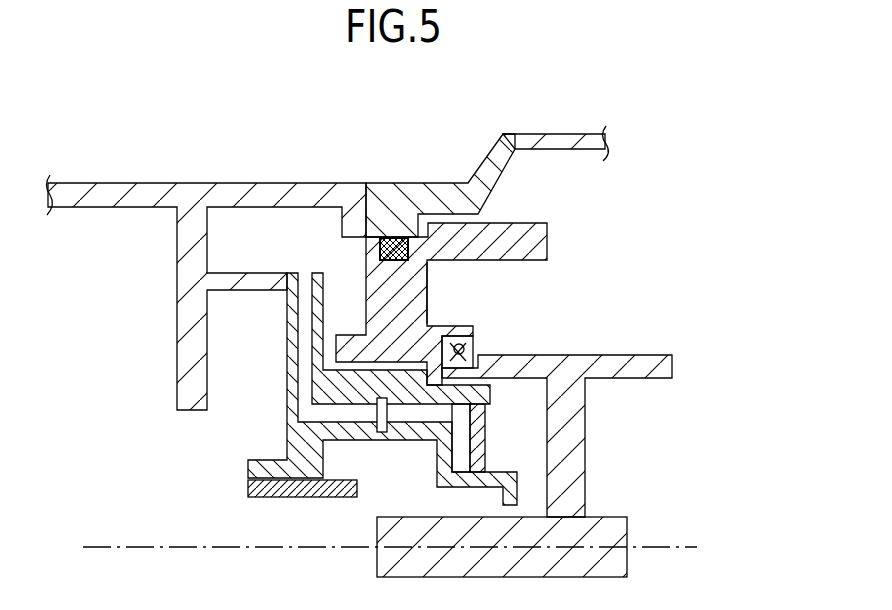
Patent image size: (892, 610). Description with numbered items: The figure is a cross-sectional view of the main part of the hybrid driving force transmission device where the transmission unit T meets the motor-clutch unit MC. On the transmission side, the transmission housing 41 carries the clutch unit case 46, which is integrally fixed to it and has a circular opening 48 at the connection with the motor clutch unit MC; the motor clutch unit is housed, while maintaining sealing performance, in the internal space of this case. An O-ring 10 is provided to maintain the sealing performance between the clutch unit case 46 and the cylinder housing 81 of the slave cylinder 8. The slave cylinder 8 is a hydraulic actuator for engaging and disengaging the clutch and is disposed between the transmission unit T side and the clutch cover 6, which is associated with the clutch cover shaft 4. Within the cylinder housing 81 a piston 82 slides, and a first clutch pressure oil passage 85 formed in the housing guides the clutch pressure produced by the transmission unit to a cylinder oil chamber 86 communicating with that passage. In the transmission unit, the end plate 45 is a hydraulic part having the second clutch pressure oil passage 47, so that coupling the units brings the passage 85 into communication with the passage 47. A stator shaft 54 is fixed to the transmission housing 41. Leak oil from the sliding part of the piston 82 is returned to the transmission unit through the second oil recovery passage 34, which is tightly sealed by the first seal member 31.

The transmission housing 41 is at (122, 195).
The clutch unit case 46 is at (552, 142).
The circular opening 48 is at (366, 249).
The O-ring 10 is at (420, 278).
The cylinder housing 81 is at (427, 303).
The first seal member 31 is at (463, 343).
The second oil recovery passage 34 is at (377, 367).
The second clutch pressure oil passage 47 is at (304, 366).
The end plate 45 is at (308, 442).
The first clutch pressure oil passage 85 is at (430, 420).
The cylinder oil chamber 86 is at (460, 455).
The piston 82 is at (482, 420).
The clutch cover 6 is at (563, 452).
The clutch cover shaft 4 is at (583, 530).
The stator shaft 54 is at (248, 484).
The slave cylinder 8 is at (397, 445).
The transmission unit T is at (256, 144).
The motor-clutch unit MC is at (616, 323).